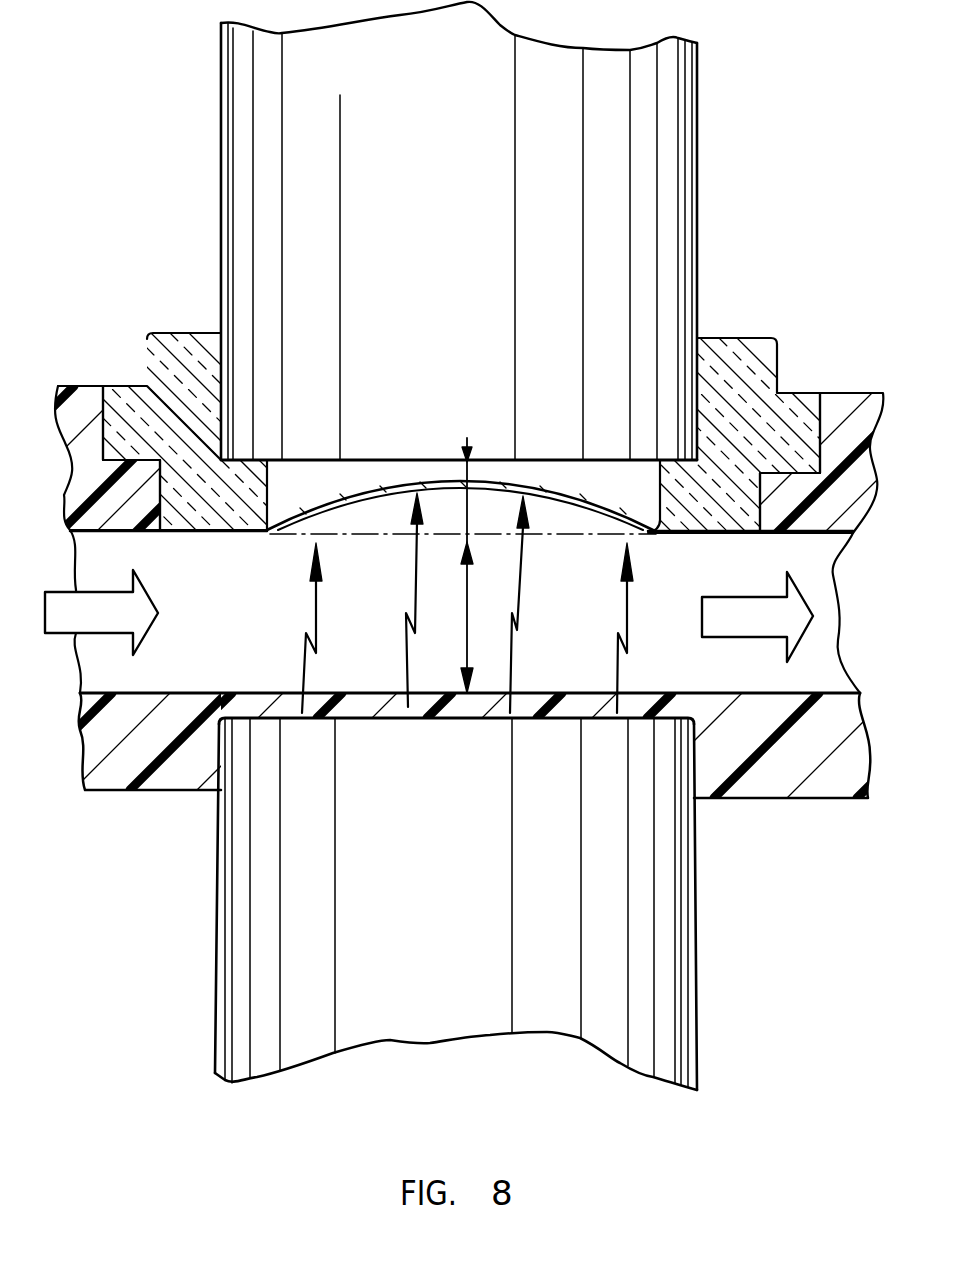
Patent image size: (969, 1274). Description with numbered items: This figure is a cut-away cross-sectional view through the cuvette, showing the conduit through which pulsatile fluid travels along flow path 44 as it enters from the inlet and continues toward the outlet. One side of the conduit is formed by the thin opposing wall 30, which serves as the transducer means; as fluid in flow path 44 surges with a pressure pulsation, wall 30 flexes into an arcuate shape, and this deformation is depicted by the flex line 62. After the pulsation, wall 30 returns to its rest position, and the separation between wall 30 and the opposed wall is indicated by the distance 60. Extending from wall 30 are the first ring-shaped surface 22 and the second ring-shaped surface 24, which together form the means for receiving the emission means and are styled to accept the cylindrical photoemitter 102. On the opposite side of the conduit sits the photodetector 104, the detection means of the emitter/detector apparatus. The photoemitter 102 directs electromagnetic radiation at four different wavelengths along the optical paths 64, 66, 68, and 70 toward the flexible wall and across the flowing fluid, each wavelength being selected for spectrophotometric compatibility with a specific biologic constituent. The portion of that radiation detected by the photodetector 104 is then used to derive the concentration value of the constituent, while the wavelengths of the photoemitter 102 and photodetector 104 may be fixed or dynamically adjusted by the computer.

The photodetector 104 is at (642, 183).
The photoemitter 102 is at (262, 922).
The second ring-shaped surface 24 is at (185, 333).
The wall 30 is at (628, 445).
The first ring-shaped surface 22 is at (264, 460).
The flex line 62 is at (462, 508).
The distance 60 is at (465, 620).
The optical path 64 is at (303, 612).
The optical path 66 is at (408, 608).
The optical path 68 is at (520, 612).
The optical path 70 is at (627, 630).
The flow path 44 is at (90, 609).